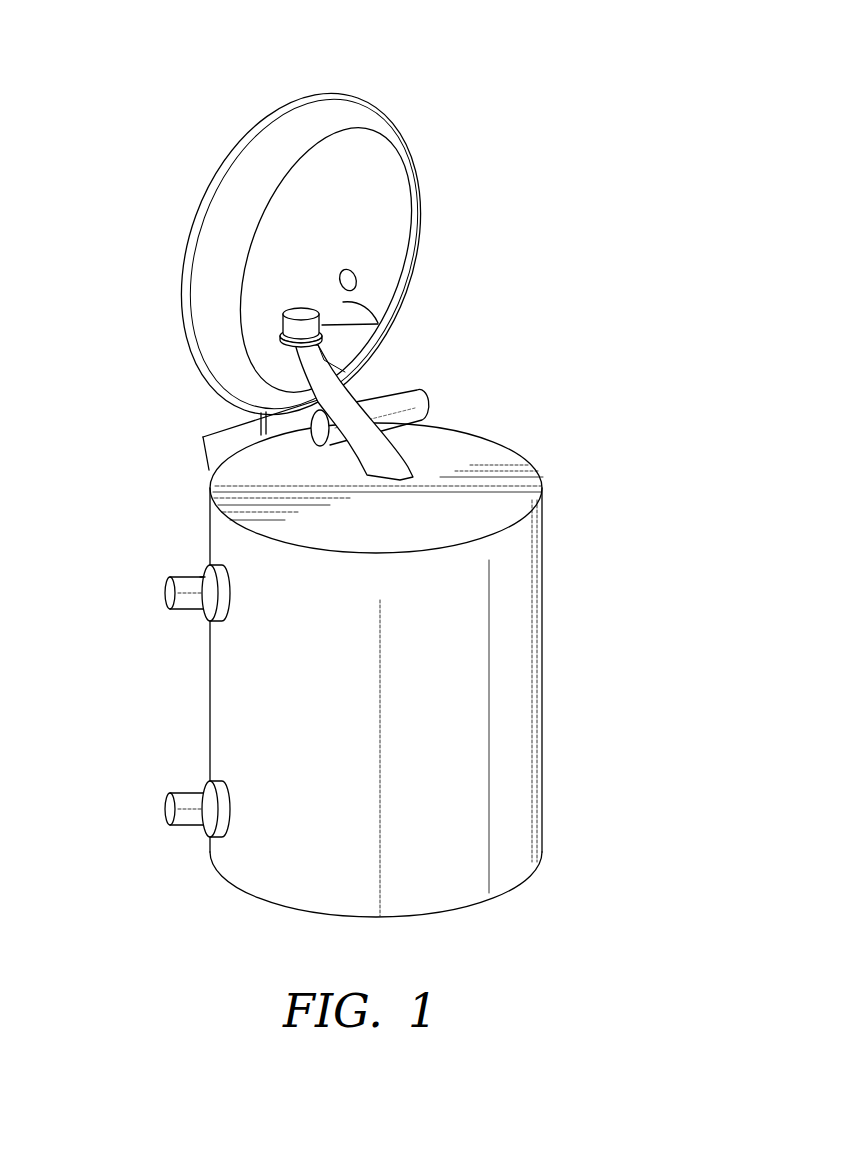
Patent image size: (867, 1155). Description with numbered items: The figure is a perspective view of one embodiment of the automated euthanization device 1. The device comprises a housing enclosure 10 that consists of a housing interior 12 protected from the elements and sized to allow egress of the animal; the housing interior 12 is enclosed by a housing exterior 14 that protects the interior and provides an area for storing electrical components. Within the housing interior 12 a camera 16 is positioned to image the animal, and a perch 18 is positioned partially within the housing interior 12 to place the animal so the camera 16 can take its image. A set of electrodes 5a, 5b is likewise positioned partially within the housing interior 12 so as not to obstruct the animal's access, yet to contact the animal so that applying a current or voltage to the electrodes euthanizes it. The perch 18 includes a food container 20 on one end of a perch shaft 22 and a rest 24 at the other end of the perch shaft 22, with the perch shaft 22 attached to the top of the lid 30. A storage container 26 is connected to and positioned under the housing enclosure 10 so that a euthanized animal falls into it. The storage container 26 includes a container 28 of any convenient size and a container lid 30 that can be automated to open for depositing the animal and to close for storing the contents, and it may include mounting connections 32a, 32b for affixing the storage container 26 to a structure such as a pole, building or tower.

The automated euthanization device 1 is at (683, 222).
The housing enclosure 10 is at (97, 82).
The housing interior 12 is at (365, 190).
The housing exterior 14 is at (282, 135).
The camera 16 is at (358, 286).
The perch 18 is at (460, 420).
The food container 20 is at (278, 329).
The perch shaft 22 is at (253, 414).
The rest 24 is at (212, 472).
The storage container 26 is at (419, 665).
The container 28 is at (563, 480).
The container lid 30 is at (475, 452).
The mounting connection 32a is at (163, 808).
The mounting connection 32b is at (163, 595).
The electrode 5a is at (282, 328).
The electrode 5b is at (297, 311).